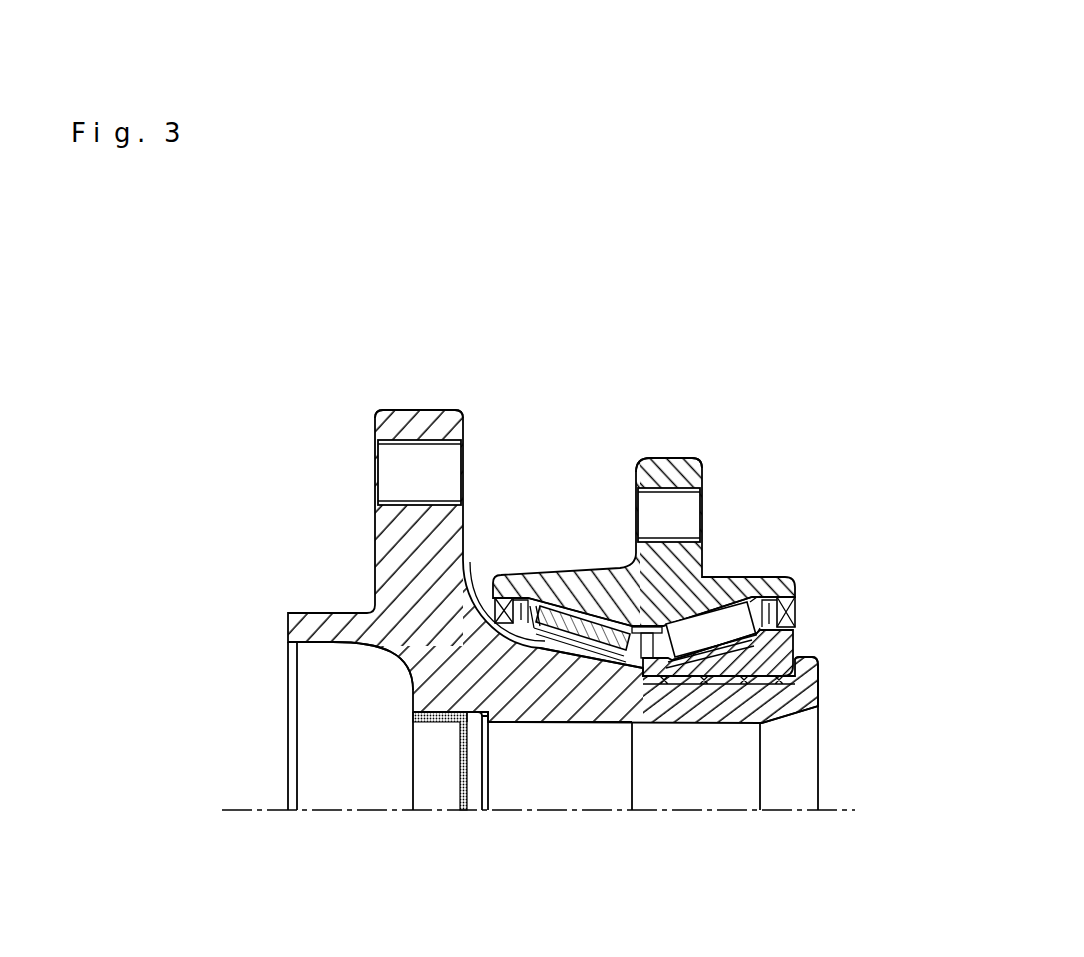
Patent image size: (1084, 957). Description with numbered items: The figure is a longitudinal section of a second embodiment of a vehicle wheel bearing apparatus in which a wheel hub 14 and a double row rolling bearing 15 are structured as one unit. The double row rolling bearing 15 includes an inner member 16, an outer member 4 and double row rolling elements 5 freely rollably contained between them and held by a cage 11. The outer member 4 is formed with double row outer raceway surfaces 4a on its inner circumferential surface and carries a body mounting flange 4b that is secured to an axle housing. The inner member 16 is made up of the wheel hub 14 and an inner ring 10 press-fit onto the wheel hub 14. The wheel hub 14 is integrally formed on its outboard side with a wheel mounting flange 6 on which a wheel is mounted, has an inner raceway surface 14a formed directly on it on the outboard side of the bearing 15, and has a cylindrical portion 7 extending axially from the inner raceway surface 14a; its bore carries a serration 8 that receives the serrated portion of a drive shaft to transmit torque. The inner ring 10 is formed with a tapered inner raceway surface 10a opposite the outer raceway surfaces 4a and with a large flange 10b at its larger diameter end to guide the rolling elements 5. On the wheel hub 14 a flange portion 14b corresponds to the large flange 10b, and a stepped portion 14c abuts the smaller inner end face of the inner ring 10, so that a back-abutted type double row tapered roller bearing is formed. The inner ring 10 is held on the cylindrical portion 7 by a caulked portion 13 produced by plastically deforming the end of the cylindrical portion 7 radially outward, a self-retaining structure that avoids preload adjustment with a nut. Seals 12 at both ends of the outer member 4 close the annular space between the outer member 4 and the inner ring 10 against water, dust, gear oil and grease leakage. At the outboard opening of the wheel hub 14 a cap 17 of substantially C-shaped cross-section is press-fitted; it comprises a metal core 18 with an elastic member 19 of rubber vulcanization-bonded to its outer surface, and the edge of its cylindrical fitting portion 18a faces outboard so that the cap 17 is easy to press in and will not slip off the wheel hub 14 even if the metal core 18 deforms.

The outer member 4 is at (590, 570).
The outer raceway surfaces 4a is at (576, 608).
The body mounting flange 4b is at (673, 470).
The rolling elements 5 is at (590, 655).
The wheel mounting flange 6 is at (412, 425).
The cylindrical portion 7 is at (683, 650).
The serration 8 is at (706, 684).
The inner ring 10 is at (777, 642).
The inner raceway surfaces 10a is at (748, 658).
The large flange 10b is at (803, 628).
The cage 11 is at (553, 603).
The seals 12 is at (492, 598).
The caulked portion 13 is at (818, 668).
The wheel hub 14 is at (300, 648).
The inner raceway surface 14a is at (420, 717).
The flange portion 14b is at (414, 691).
The stepped portion 14c is at (579, 672).
The double row rolling bearing 15 is at (590, 624).
The inner member 16 is at (528, 713).
The cap 17 is at (405, 824).
The metal core 18 is at (463, 800).
The cylindrical fitting portion 18a is at (425, 719).
The elastic member 19 is at (480, 778).